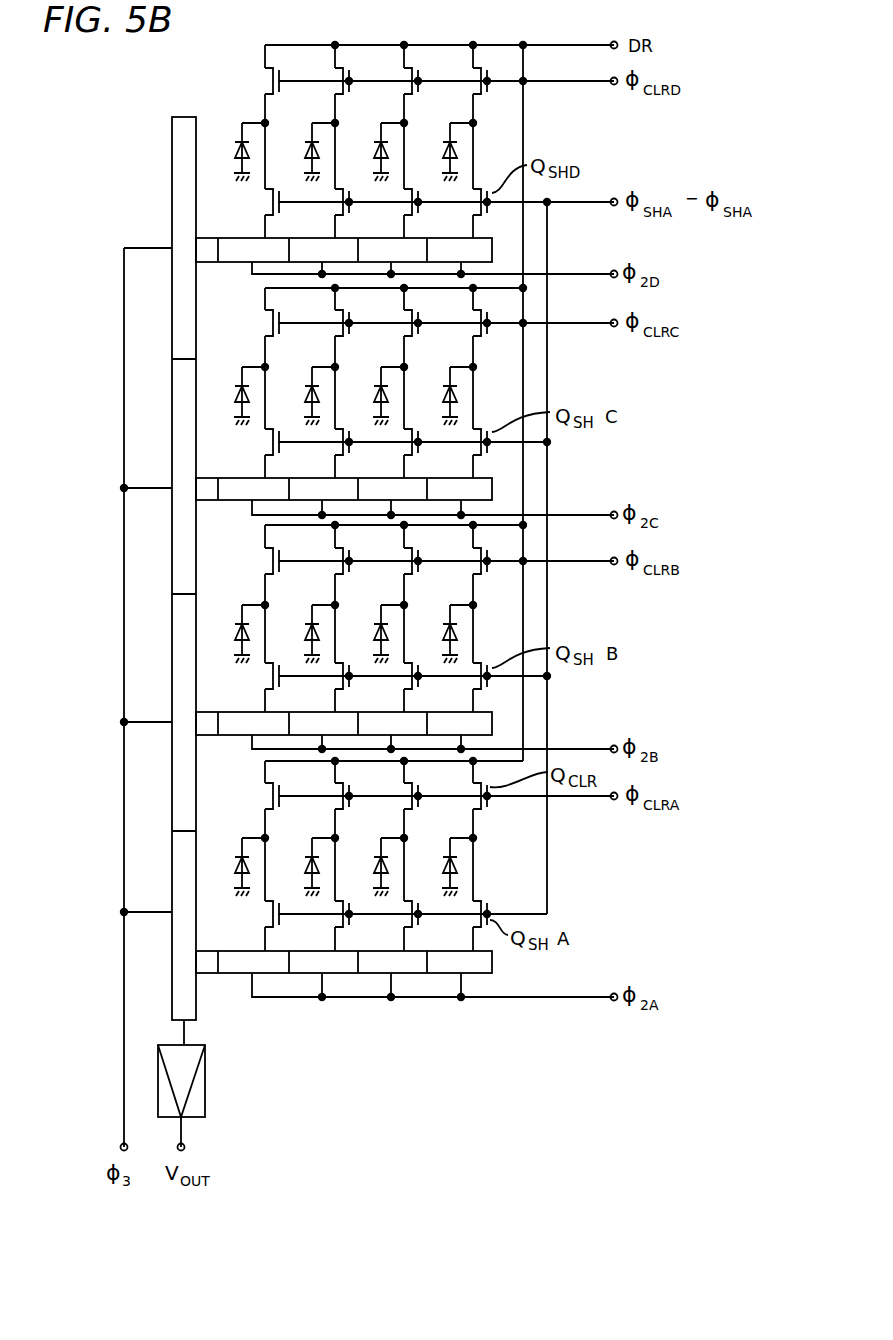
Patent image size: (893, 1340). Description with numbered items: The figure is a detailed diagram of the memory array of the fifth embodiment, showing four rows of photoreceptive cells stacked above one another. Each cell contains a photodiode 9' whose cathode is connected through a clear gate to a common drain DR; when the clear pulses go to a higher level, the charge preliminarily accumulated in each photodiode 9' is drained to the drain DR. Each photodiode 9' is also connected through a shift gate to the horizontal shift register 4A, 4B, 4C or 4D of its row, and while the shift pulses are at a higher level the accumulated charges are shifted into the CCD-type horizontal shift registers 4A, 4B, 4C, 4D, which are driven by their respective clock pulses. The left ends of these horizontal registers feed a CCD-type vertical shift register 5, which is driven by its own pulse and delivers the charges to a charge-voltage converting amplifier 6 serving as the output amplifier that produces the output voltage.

The vertical shift register 5 is at (182, 117).
The horizontal shift register 4A is at (478, 975).
The horizontal shift register 4B is at (492, 724).
The horizontal shift register 4C is at (492, 490).
The horizontal shift register 4D is at (492, 250).
The charge-voltage converting amplifier 6 is at (205, 1078).
The photodiode 9' is at (476, 865).